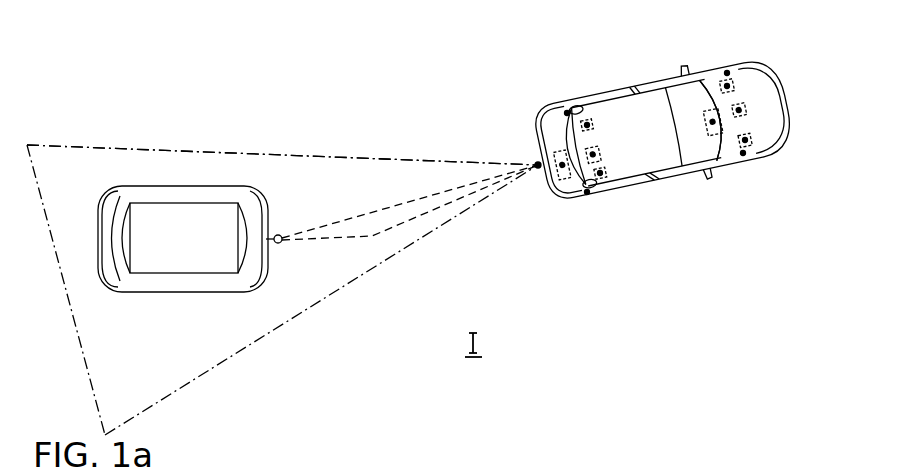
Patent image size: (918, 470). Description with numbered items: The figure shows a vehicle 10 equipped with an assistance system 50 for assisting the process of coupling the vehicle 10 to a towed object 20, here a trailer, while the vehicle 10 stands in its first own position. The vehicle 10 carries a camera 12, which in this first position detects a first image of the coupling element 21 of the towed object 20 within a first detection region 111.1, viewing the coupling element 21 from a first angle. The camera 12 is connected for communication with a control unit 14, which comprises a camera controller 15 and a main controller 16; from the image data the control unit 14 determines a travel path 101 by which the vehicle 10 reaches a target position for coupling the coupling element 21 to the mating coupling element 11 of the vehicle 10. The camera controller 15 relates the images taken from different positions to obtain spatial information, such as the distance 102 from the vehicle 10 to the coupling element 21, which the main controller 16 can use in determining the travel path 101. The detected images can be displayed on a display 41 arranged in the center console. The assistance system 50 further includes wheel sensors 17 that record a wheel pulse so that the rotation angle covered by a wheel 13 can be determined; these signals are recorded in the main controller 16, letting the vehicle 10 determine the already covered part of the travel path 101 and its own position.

The vehicle 10 is at (689, 220).
The mating coupling element 11 is at (538, 165).
The camera 12 is at (560, 185).
The wheel 13 is at (567, 113).
The control unit 14 is at (770, 93).
The camera controller 15 is at (595, 157).
The main controller 16 is at (742, 110).
The wheel sensors 17 is at (587, 125).
The towed object 20 is at (156, 314).
The coupling element 21 is at (280, 235).
The display 41 is at (713, 125).
The assistance system 50 is at (625, 62).
The travel path 101 is at (372, 236).
The distance 102 is at (410, 201).
The first detection region 111.1 is at (161, 151).